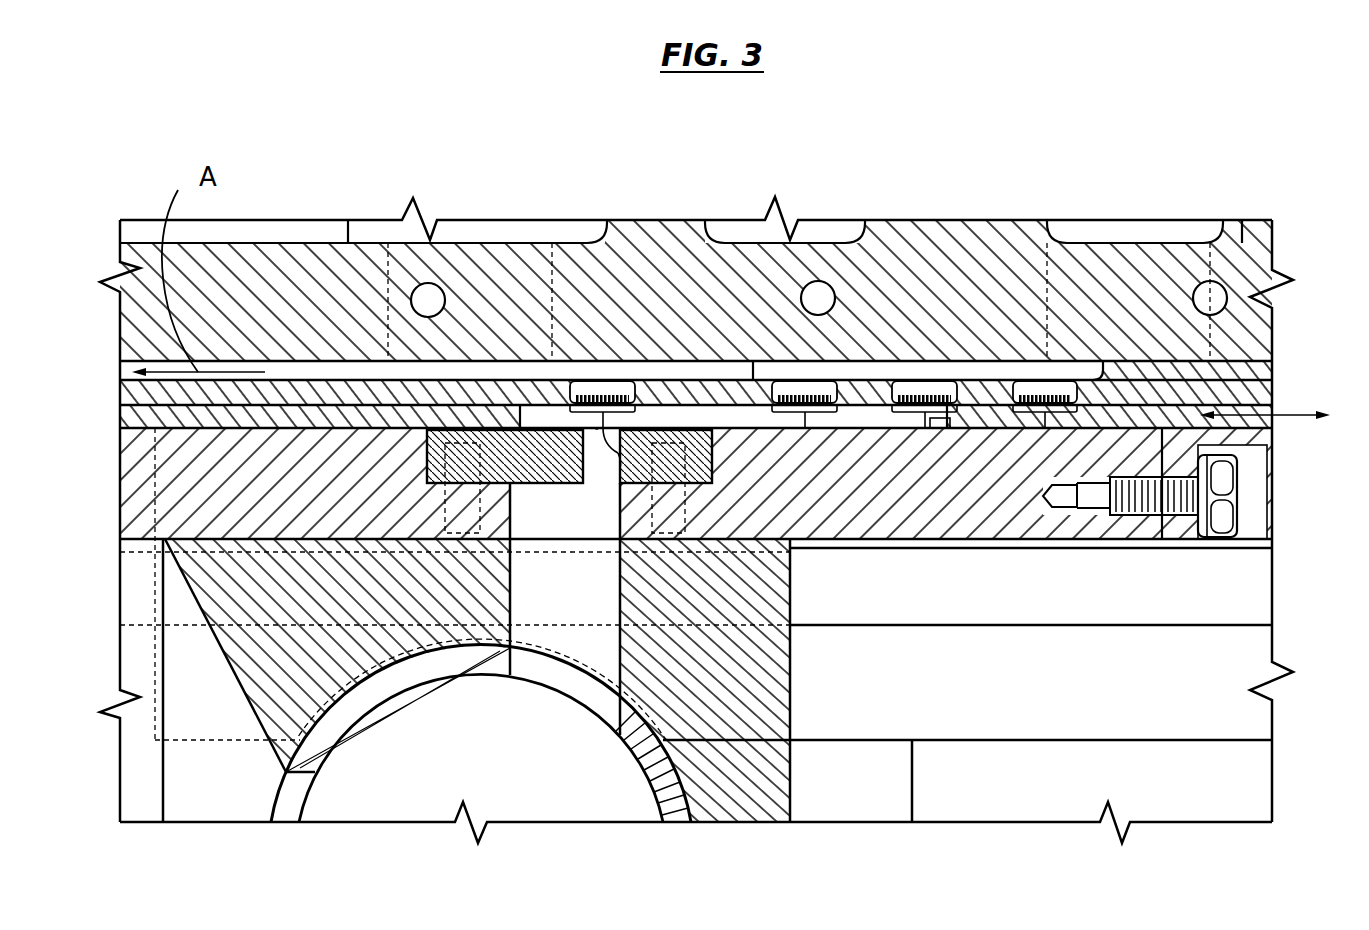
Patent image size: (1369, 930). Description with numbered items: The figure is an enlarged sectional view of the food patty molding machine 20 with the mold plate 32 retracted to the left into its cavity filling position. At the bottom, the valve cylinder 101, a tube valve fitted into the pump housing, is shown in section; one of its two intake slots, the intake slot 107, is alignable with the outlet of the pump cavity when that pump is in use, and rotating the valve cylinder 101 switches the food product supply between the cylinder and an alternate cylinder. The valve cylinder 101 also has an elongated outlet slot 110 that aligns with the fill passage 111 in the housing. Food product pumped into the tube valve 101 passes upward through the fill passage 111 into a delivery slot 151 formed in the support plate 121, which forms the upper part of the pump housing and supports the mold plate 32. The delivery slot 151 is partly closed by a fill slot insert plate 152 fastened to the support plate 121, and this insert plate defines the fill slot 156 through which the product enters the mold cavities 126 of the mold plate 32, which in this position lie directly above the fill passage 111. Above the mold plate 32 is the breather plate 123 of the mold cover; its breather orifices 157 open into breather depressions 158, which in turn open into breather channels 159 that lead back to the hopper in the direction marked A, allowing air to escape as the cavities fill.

The machine 20 is at (1192, 140).
The mold plate 32 is at (1180, 415).
The valve cylinder 101 is at (367, 713).
The intake slot 107 is at (277, 820).
The outlet slot 110 is at (617, 667).
The fill passage 111 is at (597, 690).
The support plate 121 is at (216, 432).
The breather plate 123 is at (1273, 378).
The mold cavities 126 is at (933, 430).
The delivery slot 151 is at (617, 497).
The fill slot insert plate 152 is at (543, 483).
The fill slot 156 is at (622, 468).
The breather orifices 157 is at (1047, 403).
The breather depressions 158 is at (893, 390).
The breather channels 159 is at (1090, 375).